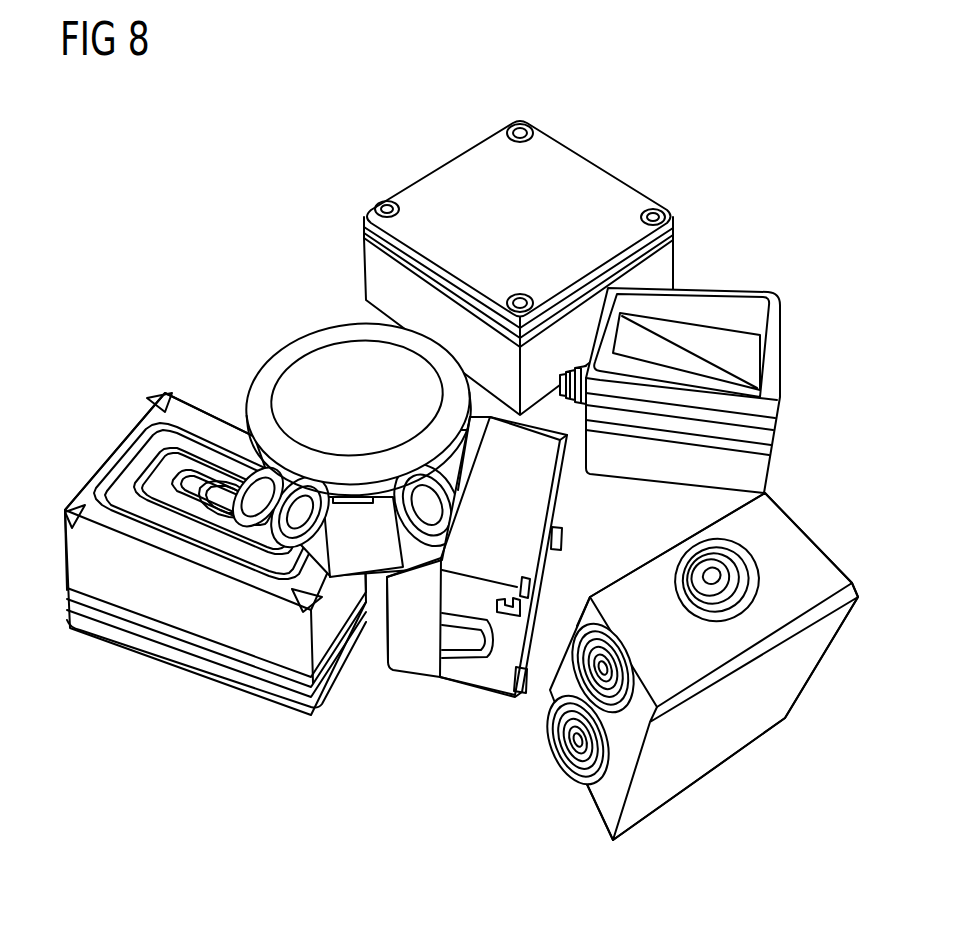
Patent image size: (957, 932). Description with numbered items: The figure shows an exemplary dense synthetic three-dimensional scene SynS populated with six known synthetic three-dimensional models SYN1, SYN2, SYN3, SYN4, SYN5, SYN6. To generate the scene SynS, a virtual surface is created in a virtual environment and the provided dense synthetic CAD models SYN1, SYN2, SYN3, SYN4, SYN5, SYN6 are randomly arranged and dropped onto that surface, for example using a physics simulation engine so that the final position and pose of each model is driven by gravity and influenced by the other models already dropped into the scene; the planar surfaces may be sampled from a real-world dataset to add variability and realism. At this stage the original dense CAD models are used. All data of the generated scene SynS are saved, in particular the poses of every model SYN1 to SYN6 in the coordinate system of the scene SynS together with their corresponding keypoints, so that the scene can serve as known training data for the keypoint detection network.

The synthetic 3D scene SynS is at (748, 112).
The synthetic 3D model SYN1 is at (608, 165).
The synthetic 3D model SYN2 is at (777, 302).
The synthetic 3D model SYN3 is at (593, 800).
The synthetic 3D model SYN4 is at (412, 678).
The synthetic 3D model SYN5 is at (207, 677).
The synthetic 3D model SYN6 is at (293, 345).